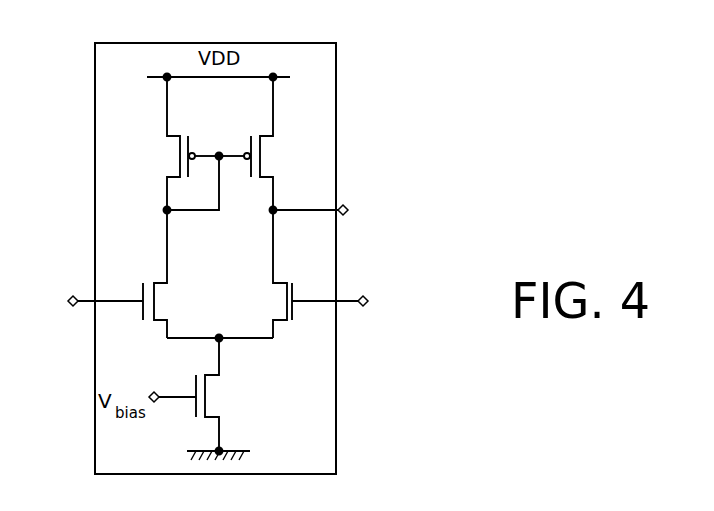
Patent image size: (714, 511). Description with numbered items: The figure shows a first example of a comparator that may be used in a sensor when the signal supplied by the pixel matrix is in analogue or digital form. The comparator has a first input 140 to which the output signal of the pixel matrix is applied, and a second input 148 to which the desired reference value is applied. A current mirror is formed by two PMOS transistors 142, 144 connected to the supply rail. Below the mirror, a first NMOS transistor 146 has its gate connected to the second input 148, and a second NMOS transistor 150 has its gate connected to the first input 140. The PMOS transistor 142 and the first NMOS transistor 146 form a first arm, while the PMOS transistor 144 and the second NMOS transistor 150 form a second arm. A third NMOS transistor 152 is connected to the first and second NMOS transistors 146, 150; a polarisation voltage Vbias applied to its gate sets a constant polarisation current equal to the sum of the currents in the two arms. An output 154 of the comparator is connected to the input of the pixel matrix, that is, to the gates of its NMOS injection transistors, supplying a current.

The first input 140 is at (369, 300).
The PMOS transistor 142 is at (177, 172).
The PMOS transistor 144 is at (263, 172).
The first NMOS transistor 146 is at (162, 280).
The second input 148 is at (107, 303).
The second NMOS transistor 150 is at (282, 318).
The third NMOS transistor 152 is at (212, 378).
The output 154 is at (349, 208).